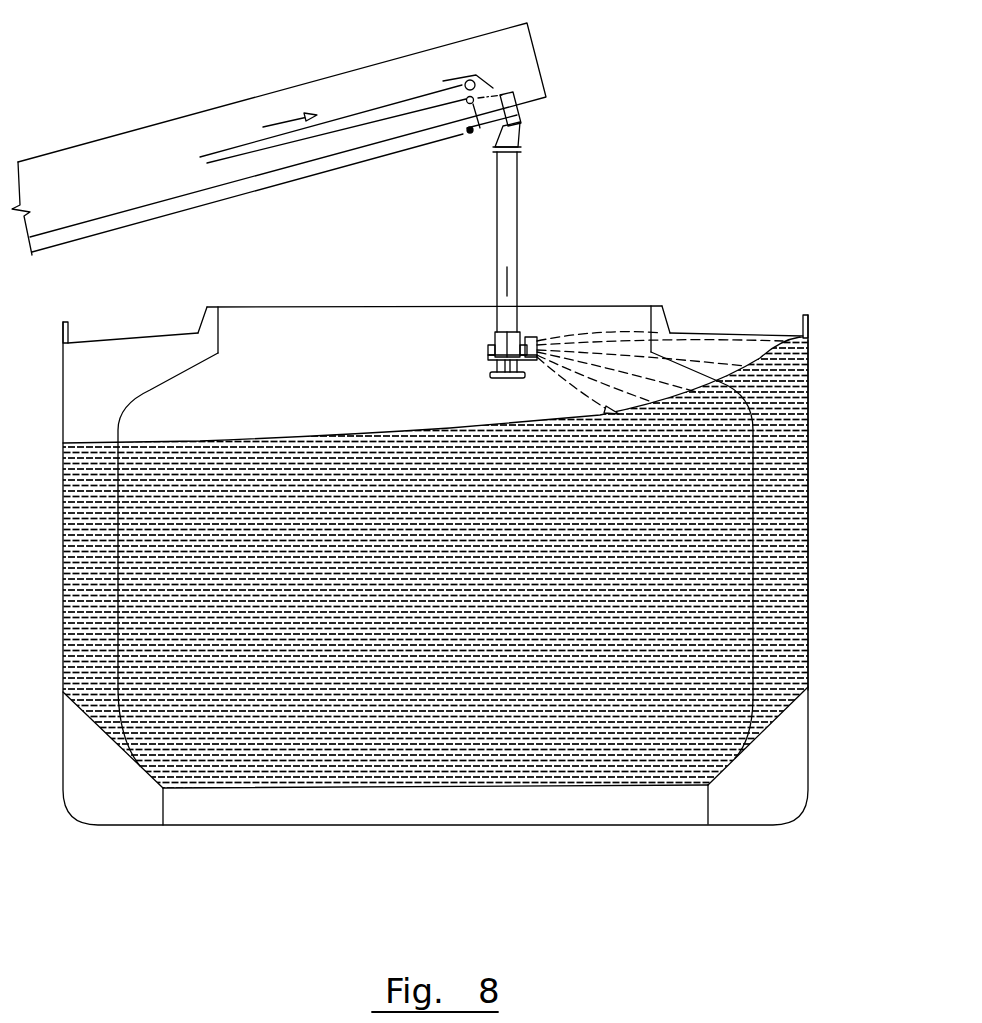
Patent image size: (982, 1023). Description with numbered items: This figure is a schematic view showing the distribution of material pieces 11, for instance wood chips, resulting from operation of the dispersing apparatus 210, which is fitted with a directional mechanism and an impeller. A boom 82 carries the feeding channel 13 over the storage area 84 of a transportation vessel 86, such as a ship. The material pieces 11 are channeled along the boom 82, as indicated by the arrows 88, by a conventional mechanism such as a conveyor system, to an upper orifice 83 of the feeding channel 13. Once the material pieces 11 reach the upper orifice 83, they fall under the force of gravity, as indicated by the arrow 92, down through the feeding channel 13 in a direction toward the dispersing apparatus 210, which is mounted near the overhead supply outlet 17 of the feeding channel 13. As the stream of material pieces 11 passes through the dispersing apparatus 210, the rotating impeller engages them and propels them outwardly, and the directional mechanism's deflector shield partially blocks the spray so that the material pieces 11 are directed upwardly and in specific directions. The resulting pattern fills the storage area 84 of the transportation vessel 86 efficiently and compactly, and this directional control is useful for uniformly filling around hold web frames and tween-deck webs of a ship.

The boom 82 is at (322, 139).
The arrows 88 is at (356, 119).
The upper orifice 83 is at (553, 122).
The feeding channel 13 is at (563, 242).
The arrow 92 is at (567, 279).
The supply outlet 17 is at (464, 320).
The dispersing apparatus 210 is at (470, 365).
The storage area 84 is at (435, 521).
The transportation vessel 86 is at (826, 438).
The material pieces 11 is at (435, 599).